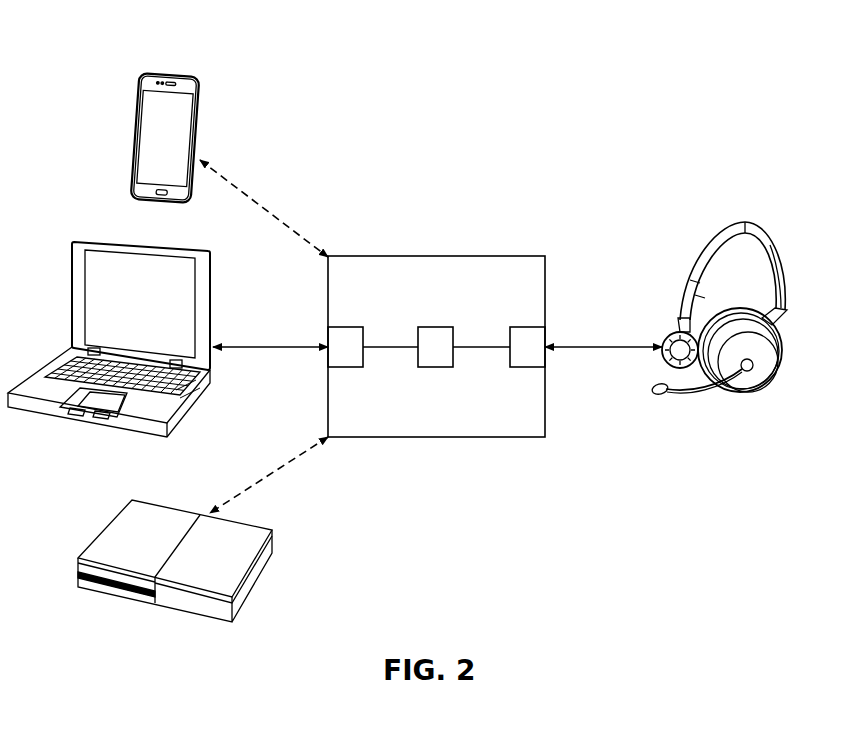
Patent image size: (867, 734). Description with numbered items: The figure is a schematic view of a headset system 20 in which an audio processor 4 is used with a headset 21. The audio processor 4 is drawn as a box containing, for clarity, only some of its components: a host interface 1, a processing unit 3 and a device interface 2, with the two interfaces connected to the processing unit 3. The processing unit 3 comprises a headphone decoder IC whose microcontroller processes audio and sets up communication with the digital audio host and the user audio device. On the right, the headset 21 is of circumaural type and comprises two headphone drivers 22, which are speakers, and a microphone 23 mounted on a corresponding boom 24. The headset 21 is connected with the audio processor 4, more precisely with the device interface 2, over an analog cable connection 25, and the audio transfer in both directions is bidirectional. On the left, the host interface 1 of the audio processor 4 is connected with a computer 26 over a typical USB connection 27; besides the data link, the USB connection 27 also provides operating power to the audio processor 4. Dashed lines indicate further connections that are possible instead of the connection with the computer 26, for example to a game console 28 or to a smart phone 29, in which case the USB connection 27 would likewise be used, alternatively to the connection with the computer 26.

The headset system 20 is at (776, 49).
The smart phone 29 is at (166, 135).
The computer 26 is at (110, 243).
The game console 28 is at (113, 522).
The audio processor 4 is at (375, 256).
The host interface 1 is at (347, 327).
The processing unit 3 is at (437, 327).
The device interface 2 is at (527, 327).
The USB connection 27 is at (274, 346).
The analog cable connection 25 is at (608, 346).
The headset 21 is at (737, 339).
The headphone drivers 22 is at (673, 327).
The microphone 23 is at (658, 395).
The boom 24 is at (688, 396).